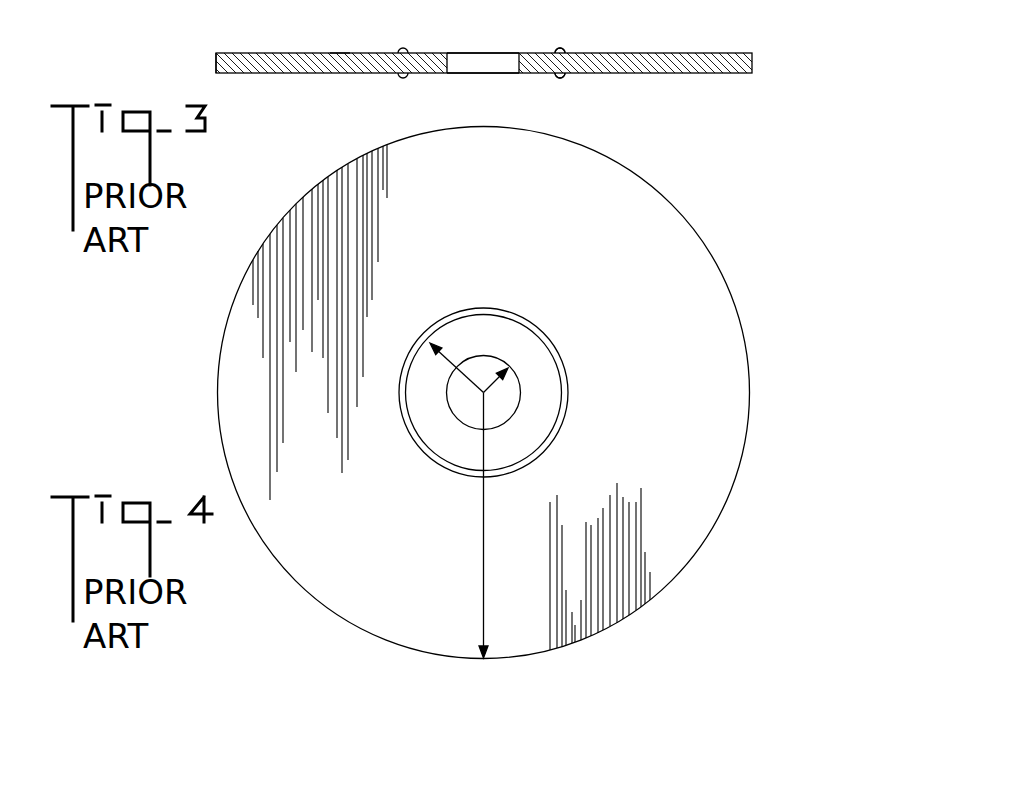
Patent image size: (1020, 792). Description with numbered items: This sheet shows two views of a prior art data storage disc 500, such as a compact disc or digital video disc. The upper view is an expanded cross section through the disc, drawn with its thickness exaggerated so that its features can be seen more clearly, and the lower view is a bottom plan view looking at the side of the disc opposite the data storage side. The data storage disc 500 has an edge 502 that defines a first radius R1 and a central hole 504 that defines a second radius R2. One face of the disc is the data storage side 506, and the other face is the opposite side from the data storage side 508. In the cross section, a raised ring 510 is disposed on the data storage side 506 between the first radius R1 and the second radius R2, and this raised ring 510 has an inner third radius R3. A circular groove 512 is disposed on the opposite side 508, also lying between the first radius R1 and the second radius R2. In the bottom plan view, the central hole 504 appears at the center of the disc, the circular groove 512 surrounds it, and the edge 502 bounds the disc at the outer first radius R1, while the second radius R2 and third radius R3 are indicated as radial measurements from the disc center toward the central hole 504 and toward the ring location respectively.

In FIG. 3, the data storage disc 500 is at (772, 36).
In FIG. 4, the data storage disc 500 is at (740, 210).
In FIG. 3, the edge 502 is at (216, 68).
In FIG. 4, the edge 502 is at (281, 222).
In FIG. 3, the central hole 504 is at (473, 53).
In FIG. 4, the central hole 504 is at (467, 407).
In FIG. 3, the data storage side 506 is at (340, 53).
In FIG. 3, the opposite side from the data storage side 508 is at (325, 73).
In FIG. 4, the opposite side from the data storage side 508 is at (502, 228).
In FIG. 3, the raised ring 510 is at (562, 50).
In FIG. 3, the circular groove 512 is at (560, 76).
In FIG. 4, the circular groove 512 is at (448, 320).
In FIG. 4, the first radius R1 is at (482, 567).
In FIG. 4, the second radius R2 is at (490, 392).
In FIG. 4, the third radius R3 is at (455, 373).